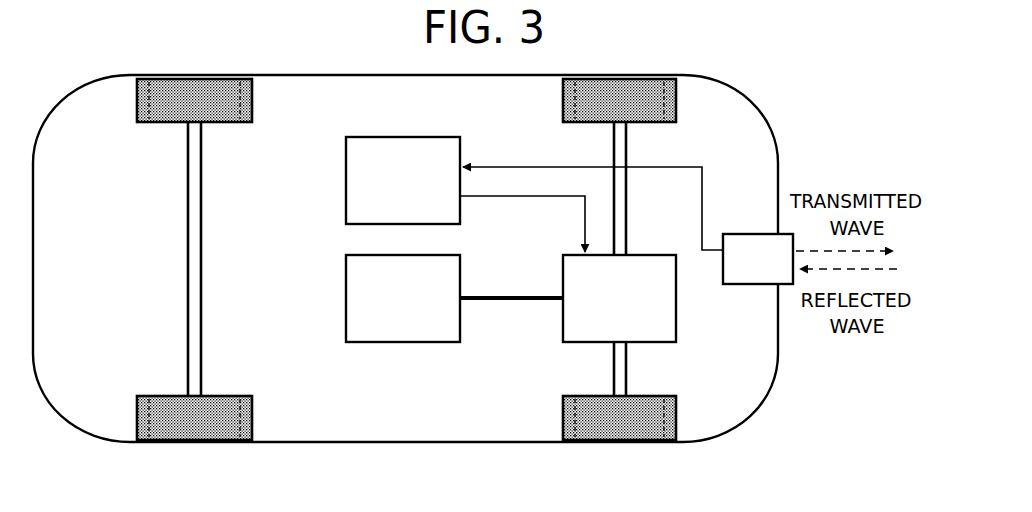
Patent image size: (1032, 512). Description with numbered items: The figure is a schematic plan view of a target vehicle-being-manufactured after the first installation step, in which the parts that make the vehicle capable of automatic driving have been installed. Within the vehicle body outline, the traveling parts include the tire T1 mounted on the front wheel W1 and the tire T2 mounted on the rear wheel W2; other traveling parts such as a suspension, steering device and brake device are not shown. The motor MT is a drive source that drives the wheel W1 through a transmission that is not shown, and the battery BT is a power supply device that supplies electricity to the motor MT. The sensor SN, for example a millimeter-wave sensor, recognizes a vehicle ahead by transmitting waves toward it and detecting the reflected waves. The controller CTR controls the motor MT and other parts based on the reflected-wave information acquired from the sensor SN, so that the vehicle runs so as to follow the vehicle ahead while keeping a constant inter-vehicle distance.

The front wheel W1 is at (565, 443).
The rear wheel W2 is at (141, 442).
The tire T1 is at (619, 438).
The tire T2 is at (195, 438).
The controller CTR is at (403, 180).
The battery BT is at (403, 298).
The motor MT is at (619, 298).
The sensor SN is at (758, 259).